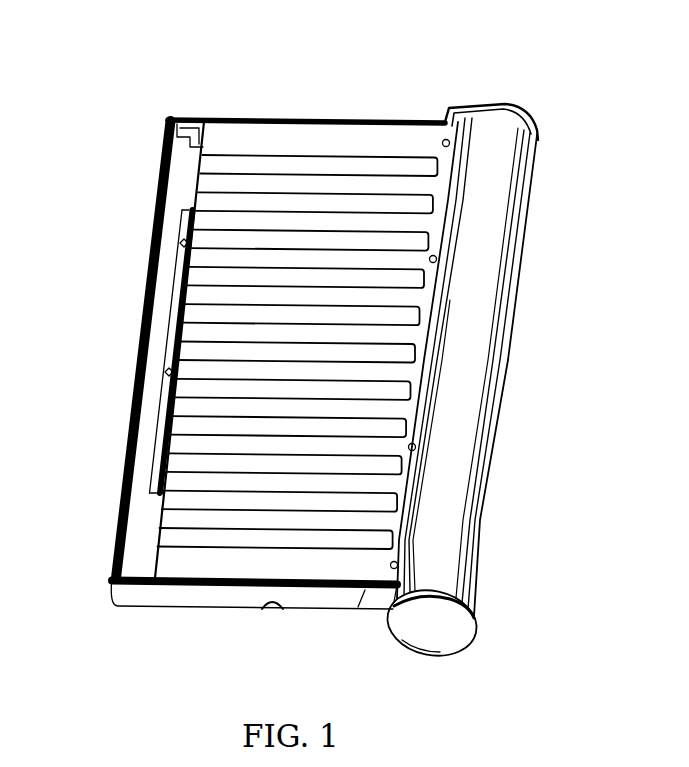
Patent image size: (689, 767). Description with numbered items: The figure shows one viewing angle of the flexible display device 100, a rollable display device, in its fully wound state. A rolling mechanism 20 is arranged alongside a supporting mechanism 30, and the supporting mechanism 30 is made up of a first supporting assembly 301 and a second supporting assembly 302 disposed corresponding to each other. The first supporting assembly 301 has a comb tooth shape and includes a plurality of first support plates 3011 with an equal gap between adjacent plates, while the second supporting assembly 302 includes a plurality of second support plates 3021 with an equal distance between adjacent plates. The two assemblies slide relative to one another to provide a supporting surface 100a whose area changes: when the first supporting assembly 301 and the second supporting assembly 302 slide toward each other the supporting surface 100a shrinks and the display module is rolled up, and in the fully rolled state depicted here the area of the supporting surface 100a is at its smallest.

The flexible display device 100 is at (372, 56).
The supporting surface 100a is at (379, 165).
The rolling mechanism 20 is at (462, 430).
The supporting mechanism 30 is at (297, 138).
The first supporting assembly 301 is at (211, 563).
The first support plate 3011 is at (297, 563).
The second supporting assembly 302 is at (150, 414).
The second support plate 3021 is at (213, 160).